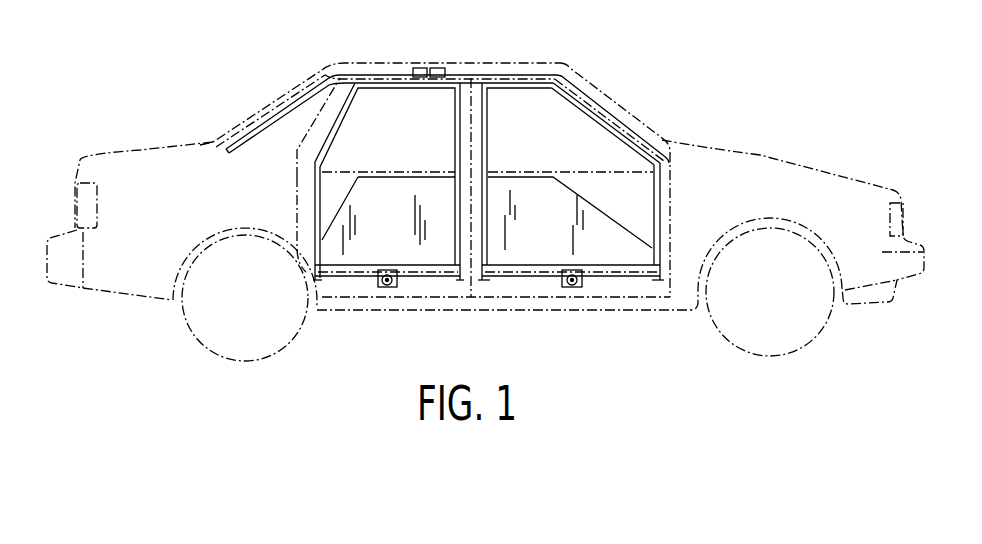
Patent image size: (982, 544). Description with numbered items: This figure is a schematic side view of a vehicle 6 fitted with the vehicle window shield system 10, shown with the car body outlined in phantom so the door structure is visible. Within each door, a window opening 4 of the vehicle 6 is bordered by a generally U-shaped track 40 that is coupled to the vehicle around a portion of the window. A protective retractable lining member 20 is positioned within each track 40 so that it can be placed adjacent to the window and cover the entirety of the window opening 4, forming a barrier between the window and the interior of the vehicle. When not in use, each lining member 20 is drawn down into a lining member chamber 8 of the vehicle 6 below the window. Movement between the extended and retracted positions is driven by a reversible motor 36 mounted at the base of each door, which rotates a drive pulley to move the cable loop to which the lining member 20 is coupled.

The vehicle window shield system 10 is at (310, 366).
The vehicle 6 is at (760, 158).
The window opening 4 is at (552, 110).
The U-shaped track 40 is at (600, 122).
The lining member chamber 8 is at (620, 186).
The protective retractable lining member 20 is at (425, 240).
The reversible motor 36 is at (385, 288).